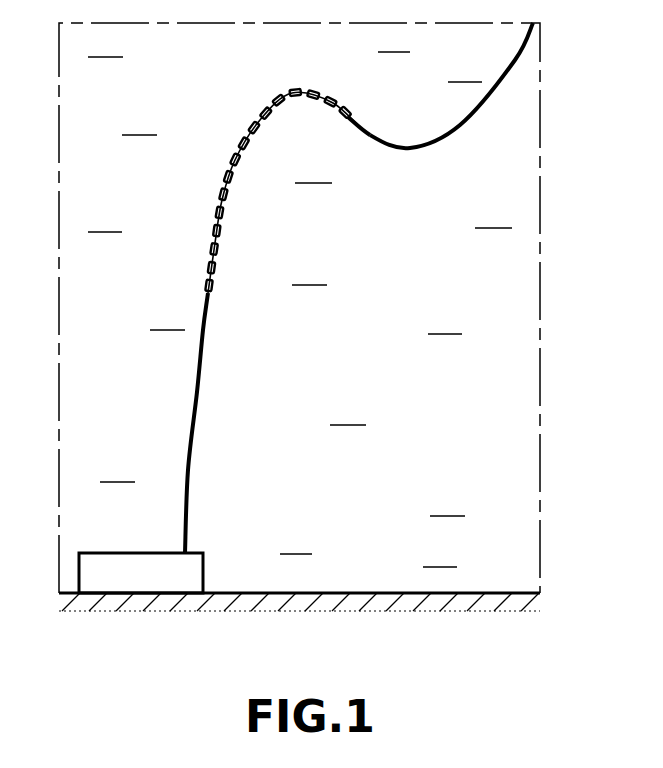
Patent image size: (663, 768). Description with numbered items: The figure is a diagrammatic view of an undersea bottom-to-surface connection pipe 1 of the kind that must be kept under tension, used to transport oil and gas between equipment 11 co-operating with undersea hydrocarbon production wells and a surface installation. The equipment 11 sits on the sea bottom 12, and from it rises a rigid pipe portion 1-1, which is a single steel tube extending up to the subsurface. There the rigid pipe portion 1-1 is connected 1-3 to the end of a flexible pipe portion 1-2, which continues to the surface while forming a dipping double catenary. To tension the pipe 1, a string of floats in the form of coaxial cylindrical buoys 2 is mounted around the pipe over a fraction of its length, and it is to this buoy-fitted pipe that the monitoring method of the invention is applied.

The undersea bottom-to-surface connection pipe 1 is at (359, 288).
The rigid pipe portion 1-1 is at (197, 392).
The flexible pipe portion 1-2 is at (451, 107).
The connection 1-3 is at (287, 170).
The buoy 2 is at (292, 89).
The equipment 11 is at (92, 562).
The sea bottom 12 is at (335, 593).